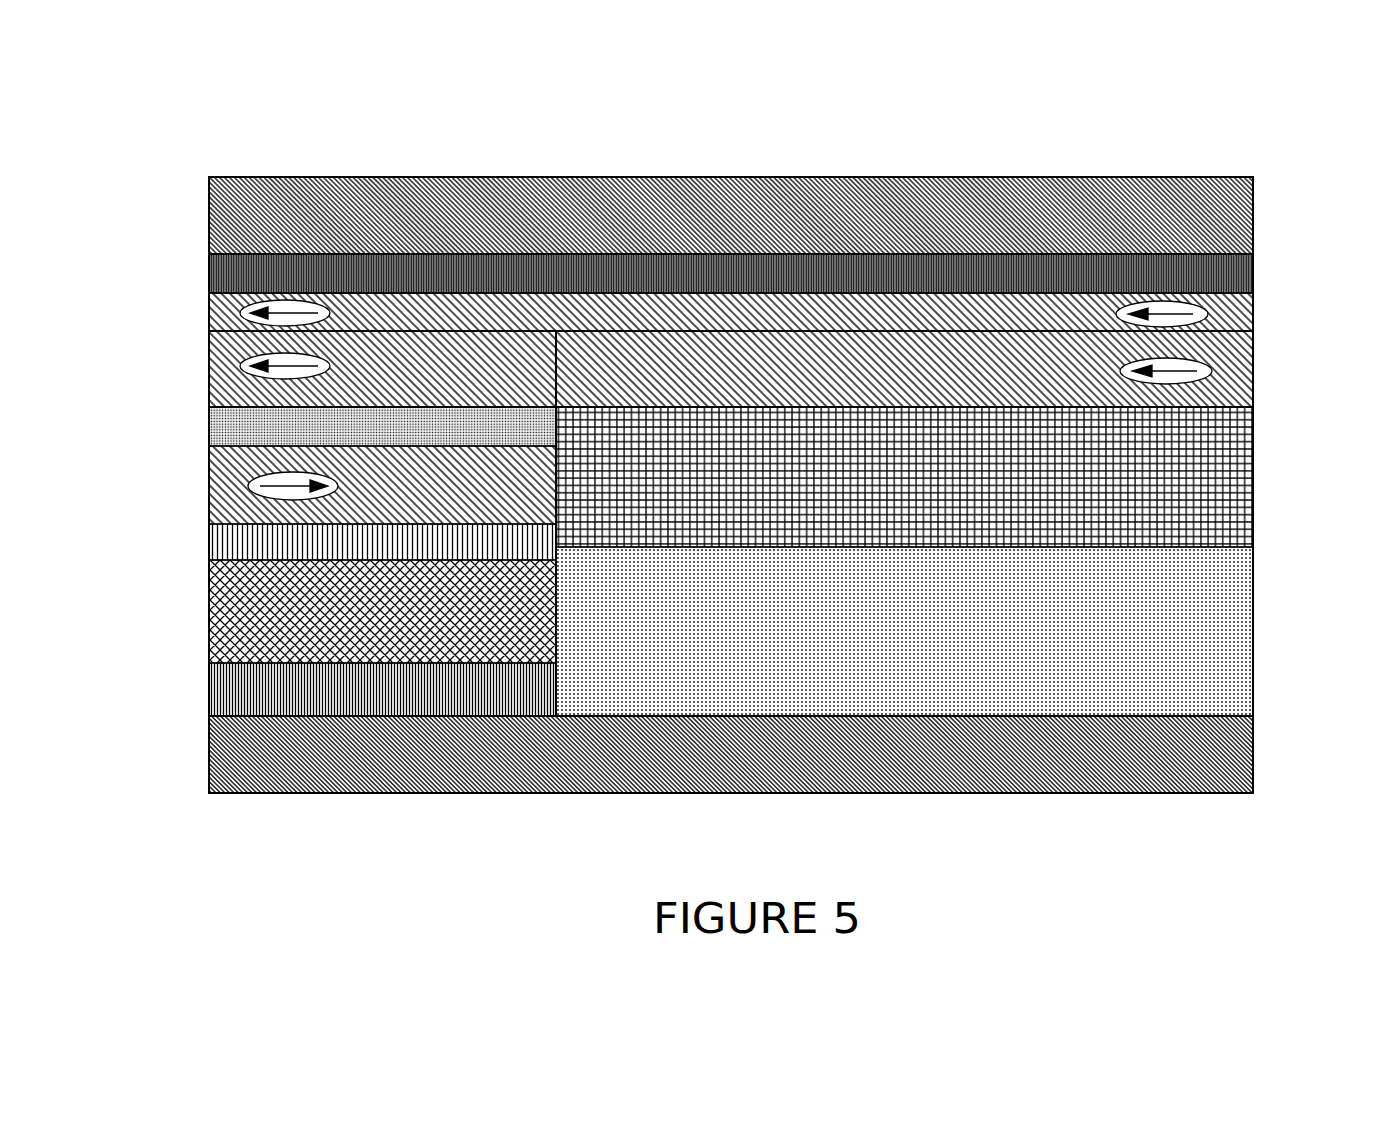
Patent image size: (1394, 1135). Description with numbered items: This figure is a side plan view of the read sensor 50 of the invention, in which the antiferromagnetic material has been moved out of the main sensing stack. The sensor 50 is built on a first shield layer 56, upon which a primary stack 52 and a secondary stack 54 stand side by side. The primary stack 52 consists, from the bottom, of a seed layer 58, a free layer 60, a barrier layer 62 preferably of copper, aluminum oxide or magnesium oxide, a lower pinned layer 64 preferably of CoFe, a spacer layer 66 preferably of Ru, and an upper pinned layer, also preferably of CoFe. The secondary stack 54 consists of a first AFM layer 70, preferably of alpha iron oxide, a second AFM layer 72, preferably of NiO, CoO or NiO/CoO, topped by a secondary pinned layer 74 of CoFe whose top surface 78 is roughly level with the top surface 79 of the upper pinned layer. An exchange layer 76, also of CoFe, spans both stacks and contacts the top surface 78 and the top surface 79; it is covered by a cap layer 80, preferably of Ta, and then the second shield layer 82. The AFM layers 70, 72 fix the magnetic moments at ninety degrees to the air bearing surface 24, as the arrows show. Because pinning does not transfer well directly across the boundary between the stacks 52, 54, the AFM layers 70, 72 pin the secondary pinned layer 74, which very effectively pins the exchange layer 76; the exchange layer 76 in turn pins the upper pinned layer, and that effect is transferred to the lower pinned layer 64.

The sensor 50 is at (158, 220).
The air bearing surface 24 is at (209, 331).
The primary stack 52 is at (380, 362).
The secondary stack 54 is at (798, 372).
The first shield layer 56 is at (209, 760).
The seed layer 58 is at (209, 677).
The free layer 60 is at (209, 625).
The barrier layer 62 is at (209, 537).
The lower pinned layer 64 is at (209, 485).
The spacer layer 66 is at (209, 428).
The first AFM layer 70 is at (1253, 607).
The second AFM layer 72 is at (1253, 484).
The secondary pinned layer 74 is at (1253, 373).
The exchange layer 76 is at (1253, 317).
The top surface of the secondary pinned layer 78 is at (733, 330).
The top surface of the upper pinned layer 79 is at (525, 330).
The cap layer 80 is at (1253, 280).
The second shield layer 82 is at (1253, 217).